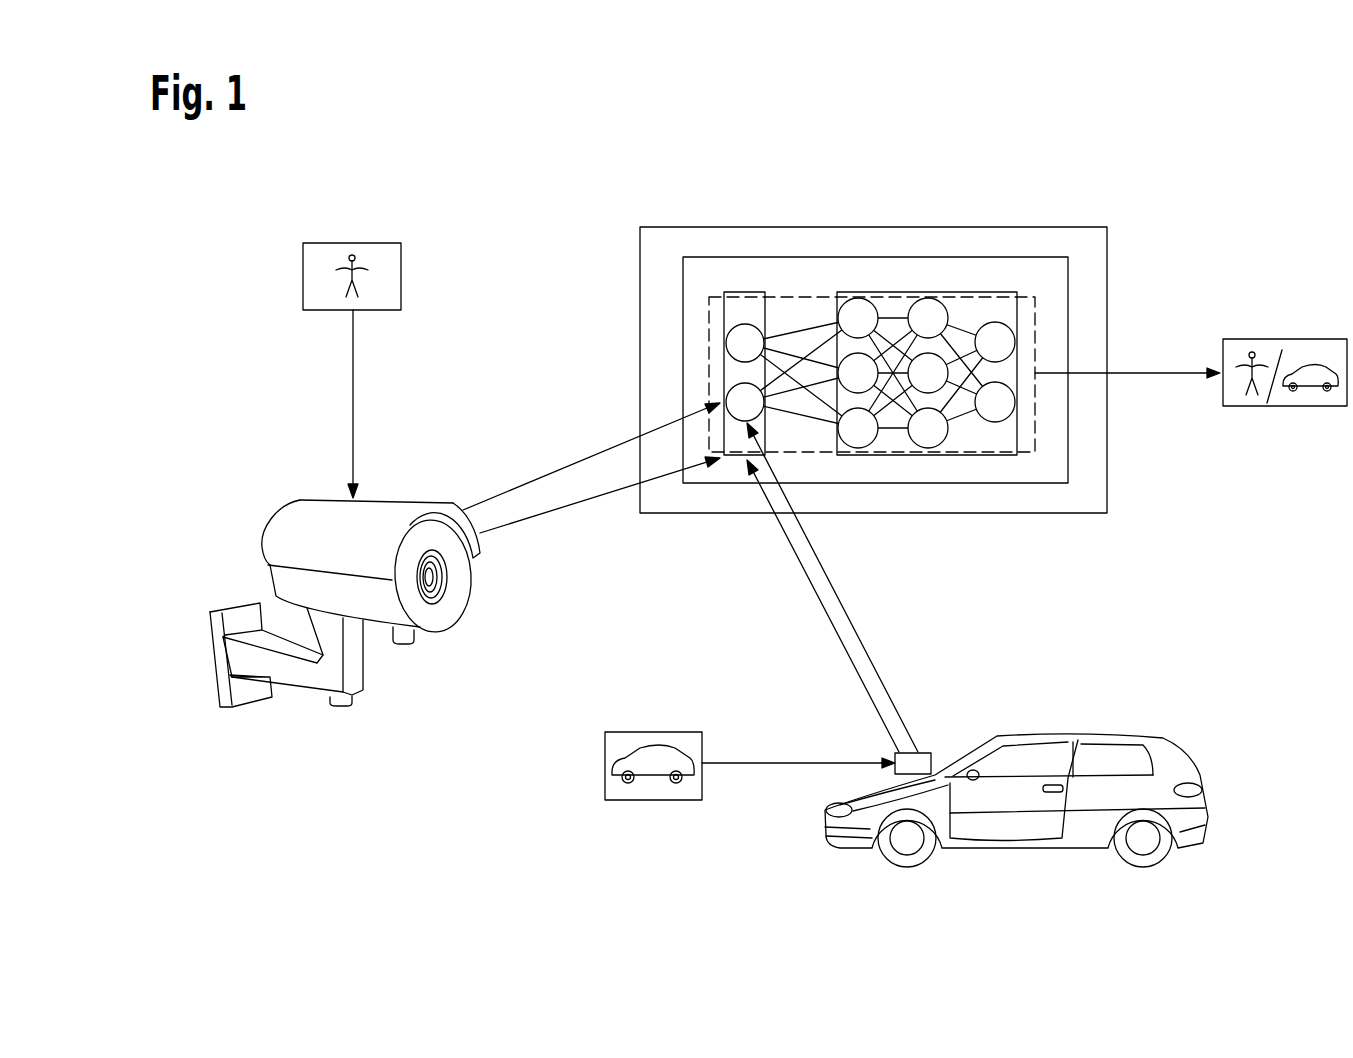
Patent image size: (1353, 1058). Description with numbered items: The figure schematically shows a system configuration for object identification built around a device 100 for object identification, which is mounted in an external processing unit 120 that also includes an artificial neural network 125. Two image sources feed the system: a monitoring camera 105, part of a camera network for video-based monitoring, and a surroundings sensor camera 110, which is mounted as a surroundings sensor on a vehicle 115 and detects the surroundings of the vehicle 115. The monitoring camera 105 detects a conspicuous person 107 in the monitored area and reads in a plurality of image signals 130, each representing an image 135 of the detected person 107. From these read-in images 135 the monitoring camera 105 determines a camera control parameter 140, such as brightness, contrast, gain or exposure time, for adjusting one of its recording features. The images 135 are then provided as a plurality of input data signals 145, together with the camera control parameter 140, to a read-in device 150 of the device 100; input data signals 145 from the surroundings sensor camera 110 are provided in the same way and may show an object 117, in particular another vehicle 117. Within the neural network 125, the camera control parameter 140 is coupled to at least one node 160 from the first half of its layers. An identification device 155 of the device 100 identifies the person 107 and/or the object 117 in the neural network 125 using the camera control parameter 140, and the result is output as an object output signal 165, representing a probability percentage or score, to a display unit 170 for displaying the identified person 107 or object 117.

The device for object identification 100 is at (828, 257).
The monitoring camera 105 is at (262, 542).
The person 107 is at (358, 268).
The surroundings sensor camera 110 is at (925, 753).
The vehicle 115 is at (1108, 737).
The object 117 is at (612, 766).
The external processing unit 120 is at (663, 227).
The artificial neural network 125 is at (1035, 297).
The image signals 130 is at (352, 389).
The image 135 is at (380, 243).
The camera control parameter 140 is at (562, 470).
The input data signals 145 is at (566, 508).
The read-in device 150 is at (745, 292).
The identification device 155 is at (900, 292).
The node 160 is at (722, 371).
The object output signal 165 is at (1160, 371).
The display unit 170 is at (1333, 339).